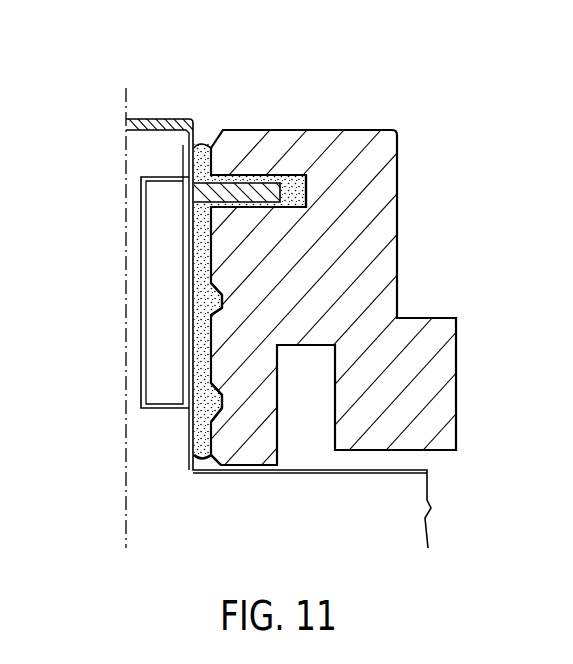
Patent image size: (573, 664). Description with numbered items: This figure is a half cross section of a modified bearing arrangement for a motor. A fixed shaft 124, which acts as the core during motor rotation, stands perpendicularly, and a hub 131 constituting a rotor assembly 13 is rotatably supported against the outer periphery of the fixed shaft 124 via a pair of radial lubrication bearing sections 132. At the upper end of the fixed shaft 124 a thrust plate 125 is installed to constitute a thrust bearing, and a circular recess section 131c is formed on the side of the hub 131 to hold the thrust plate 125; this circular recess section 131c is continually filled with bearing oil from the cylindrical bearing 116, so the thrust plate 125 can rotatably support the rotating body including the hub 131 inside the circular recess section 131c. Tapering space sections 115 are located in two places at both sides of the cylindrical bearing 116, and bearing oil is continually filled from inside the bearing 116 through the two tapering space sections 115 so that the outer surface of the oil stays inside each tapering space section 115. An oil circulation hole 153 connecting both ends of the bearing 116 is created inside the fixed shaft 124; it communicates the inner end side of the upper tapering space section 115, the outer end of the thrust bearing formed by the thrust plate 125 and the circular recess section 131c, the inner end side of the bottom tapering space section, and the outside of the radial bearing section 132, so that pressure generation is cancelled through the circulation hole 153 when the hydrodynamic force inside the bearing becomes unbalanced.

The rotor assembly 13 is at (407, 162).
The hub 131 is at (375, 287).
The circular recess section 131c is at (307, 173).
The thrust plate 125 is at (257, 177).
The tapering space section 115 is at (204, 143).
The fixed shaft 124 is at (133, 196).
The radial lubrication bearing section 132 is at (211, 247).
The cylindrical bearing 116 is at (211, 304).
The oil circulation hole 153 is at (140, 280).